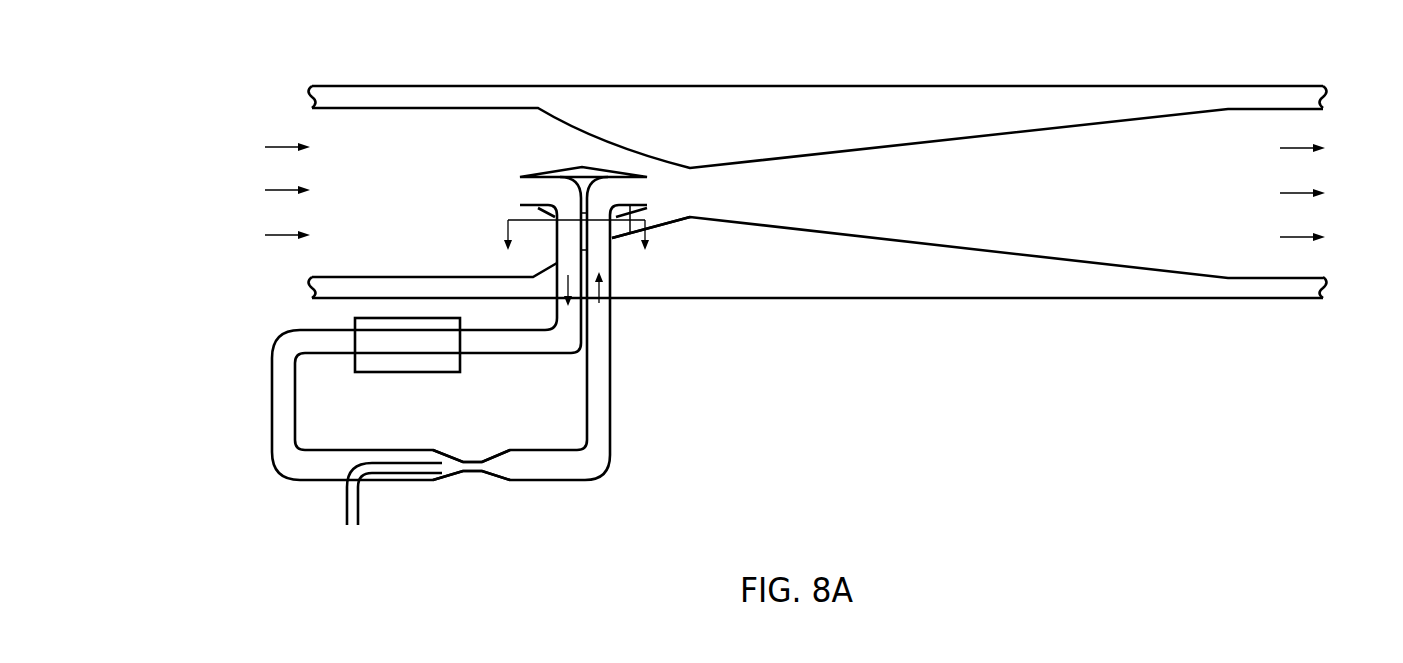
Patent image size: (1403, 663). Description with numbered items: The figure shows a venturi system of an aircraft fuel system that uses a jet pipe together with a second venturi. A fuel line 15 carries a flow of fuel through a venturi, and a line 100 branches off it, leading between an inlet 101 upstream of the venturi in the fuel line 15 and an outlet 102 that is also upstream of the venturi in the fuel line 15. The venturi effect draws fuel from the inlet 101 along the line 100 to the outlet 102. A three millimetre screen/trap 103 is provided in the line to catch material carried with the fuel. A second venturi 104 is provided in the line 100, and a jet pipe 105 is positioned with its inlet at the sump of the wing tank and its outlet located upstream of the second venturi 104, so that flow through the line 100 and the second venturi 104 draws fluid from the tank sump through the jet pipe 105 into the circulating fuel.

The fuel line 15 is at (443, 85).
The line 100 is at (399, 373).
The inlet 101 is at (524, 189).
The outlet 102 is at (648, 197).
The screen/trap 103 is at (424, 372).
The second venturi 104 is at (472, 482).
The jet pipe 105 is at (347, 508).